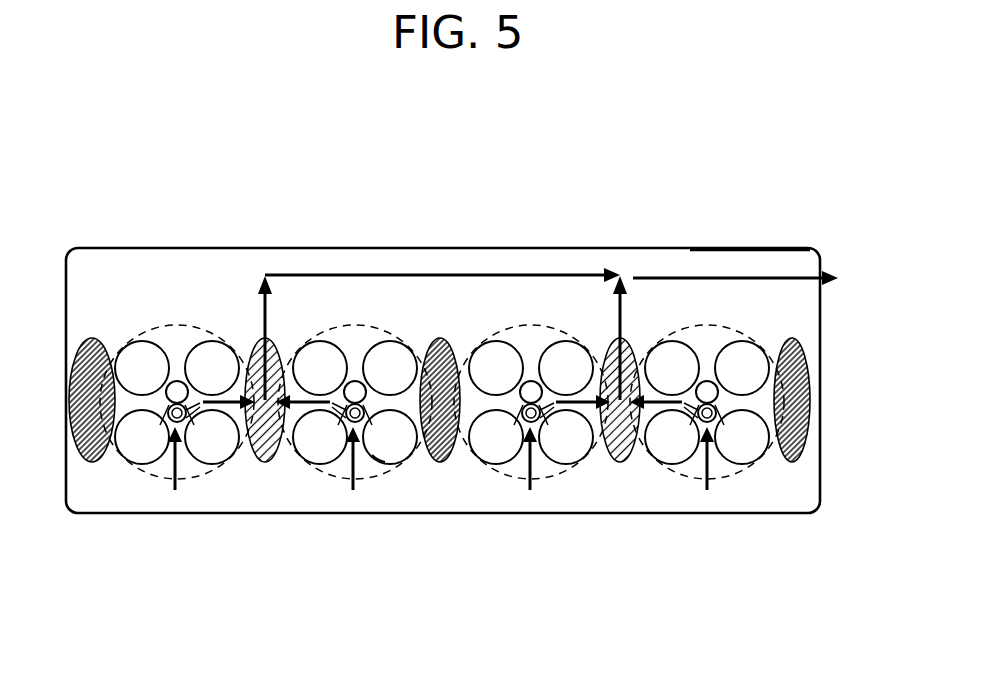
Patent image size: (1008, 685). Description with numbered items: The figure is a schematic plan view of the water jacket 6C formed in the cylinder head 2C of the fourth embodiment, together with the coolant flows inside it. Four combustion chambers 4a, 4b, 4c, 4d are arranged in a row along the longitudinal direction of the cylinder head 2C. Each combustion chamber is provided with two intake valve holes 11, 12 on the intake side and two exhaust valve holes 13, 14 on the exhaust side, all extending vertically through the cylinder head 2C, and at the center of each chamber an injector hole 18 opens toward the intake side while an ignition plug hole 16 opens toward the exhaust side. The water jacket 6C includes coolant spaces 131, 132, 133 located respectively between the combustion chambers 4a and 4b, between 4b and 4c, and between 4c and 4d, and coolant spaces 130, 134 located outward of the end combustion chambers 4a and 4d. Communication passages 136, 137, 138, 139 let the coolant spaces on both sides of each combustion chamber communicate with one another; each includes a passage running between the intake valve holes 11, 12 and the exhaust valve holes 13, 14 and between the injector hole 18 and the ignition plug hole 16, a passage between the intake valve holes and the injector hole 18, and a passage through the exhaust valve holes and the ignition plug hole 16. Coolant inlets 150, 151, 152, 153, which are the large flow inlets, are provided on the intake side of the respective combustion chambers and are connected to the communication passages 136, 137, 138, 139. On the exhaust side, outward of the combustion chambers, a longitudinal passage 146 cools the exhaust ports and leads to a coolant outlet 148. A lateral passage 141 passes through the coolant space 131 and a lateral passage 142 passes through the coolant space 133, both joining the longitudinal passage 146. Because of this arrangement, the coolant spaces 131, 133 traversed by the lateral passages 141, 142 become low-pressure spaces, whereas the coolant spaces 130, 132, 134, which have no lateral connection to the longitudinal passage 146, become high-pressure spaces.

The cylinder head 2C is at (750, 248).
The water jacket 6C is at (788, 262).
The combustion chamber 4a is at (177, 369).
The combustion chamber 4b is at (360, 383).
The combustion chamber 4c is at (531, 377).
The combustion chamber 4d is at (707, 375).
The intake valve hole 11 is at (312, 465).
The intake valve hole 12 is at (396, 466).
The exhaust valve hole 13 is at (310, 345).
The exhaust valve hole 14 is at (405, 363).
The ignition plug hole 16 is at (352, 381).
The injector hole 18 is at (362, 408).
The coolant space 130 is at (93, 462).
The coolant space 131 is at (265, 464).
The coolant space 132 is at (440, 464).
The coolant space 133 is at (620, 464).
The coolant space 134 is at (793, 464).
The communication passage 136 is at (210, 466).
The communication passage 137 is at (383, 463).
The communication passage 138 is at (568, 466).
The communication passage 139 is at (672, 466).
The lateral passage 141 is at (262, 340).
The lateral passage 142 is at (616, 292).
The longitudinal passage 146 is at (638, 276).
The coolant outlet 148 is at (836, 283).
The coolant inlet 150 is at (175, 492).
The coolant inlet 151 is at (353, 492).
The coolant inlet 152 is at (530, 492).
The coolant inlet 153 is at (707, 492).